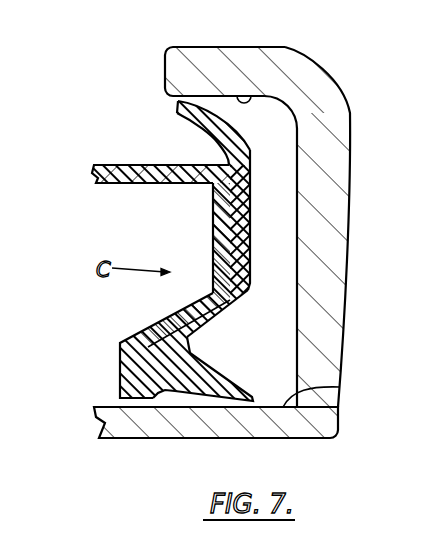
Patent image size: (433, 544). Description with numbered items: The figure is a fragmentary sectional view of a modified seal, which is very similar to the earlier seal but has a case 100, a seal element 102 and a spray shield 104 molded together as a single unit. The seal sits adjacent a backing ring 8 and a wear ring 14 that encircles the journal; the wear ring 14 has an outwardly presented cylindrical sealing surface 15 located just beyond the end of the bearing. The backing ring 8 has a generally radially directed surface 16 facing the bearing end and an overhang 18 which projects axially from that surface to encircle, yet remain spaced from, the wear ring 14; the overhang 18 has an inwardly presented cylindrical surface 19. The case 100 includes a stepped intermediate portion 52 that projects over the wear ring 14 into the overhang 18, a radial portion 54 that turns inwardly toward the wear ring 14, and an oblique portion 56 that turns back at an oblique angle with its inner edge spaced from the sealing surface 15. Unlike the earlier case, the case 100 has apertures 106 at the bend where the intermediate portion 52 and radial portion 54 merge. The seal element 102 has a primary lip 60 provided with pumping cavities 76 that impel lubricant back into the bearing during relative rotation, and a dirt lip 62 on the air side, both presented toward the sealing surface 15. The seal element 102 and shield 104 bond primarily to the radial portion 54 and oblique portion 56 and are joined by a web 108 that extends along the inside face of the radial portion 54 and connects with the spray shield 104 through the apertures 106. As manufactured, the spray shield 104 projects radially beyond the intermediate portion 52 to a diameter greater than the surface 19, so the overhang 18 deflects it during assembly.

The backing ring 8 is at (338, 250).
The wear ring 14 is at (120, 437).
The sealing surface 15 is at (340, 387).
The radially directed surface 16 is at (305, 198).
The overhang 18 is at (177, 62).
The inwardly presented surface 19 is at (247, 96).
The intermediate portion 52 is at (157, 167).
The radial portion 54 is at (247, 262).
The oblique portion 56 is at (198, 322).
The primary lip 60 is at (122, 352).
The dirt lip 62 is at (193, 437).
The pumping cavity 76 is at (120, 384).
The seal case 100 is at (226, 283).
The seal element 102 is at (134, 333).
The spray shield 104 is at (253, 141).
The apertures 106 is at (212, 199).
The web 108 is at (212, 241).